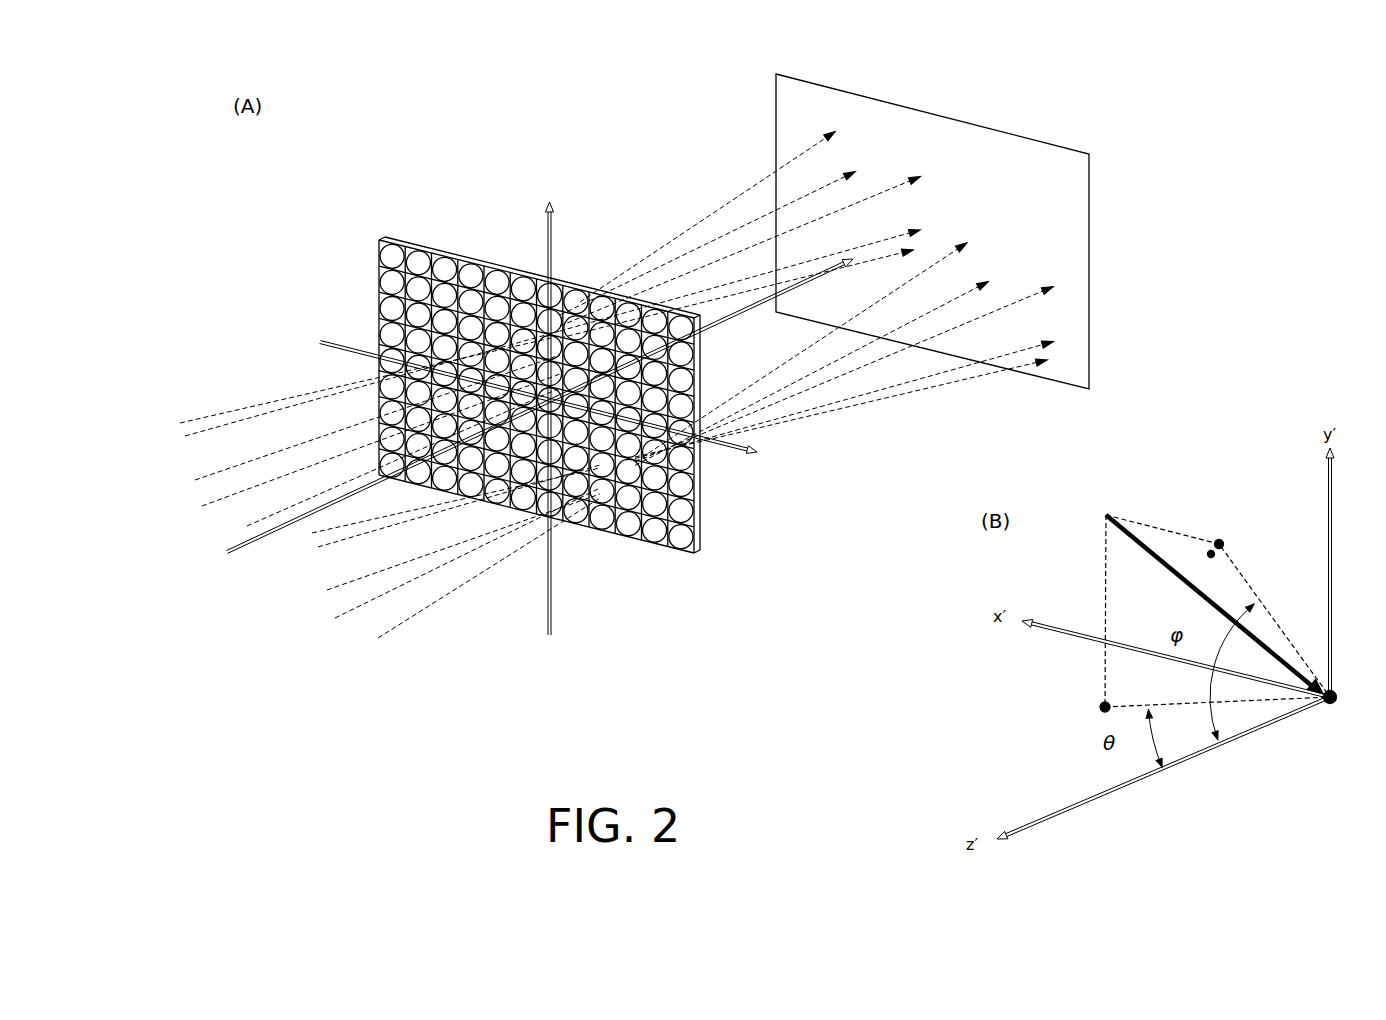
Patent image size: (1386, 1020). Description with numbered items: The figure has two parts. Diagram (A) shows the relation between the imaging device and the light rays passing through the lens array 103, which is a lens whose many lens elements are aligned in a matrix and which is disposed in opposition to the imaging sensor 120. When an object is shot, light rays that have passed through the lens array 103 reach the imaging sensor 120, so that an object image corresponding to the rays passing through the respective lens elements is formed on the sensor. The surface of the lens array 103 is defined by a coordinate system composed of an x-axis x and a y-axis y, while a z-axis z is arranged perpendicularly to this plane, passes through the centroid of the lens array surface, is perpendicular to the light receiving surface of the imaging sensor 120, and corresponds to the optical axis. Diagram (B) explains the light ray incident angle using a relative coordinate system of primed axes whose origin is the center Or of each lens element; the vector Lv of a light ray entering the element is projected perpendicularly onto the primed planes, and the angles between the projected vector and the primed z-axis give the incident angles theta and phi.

The lens array 103 is at (348, 239).
The imaging sensor 120 is at (748, 102).
The vector of a light ray Lv is at (1225, 544).
The center Or is at (1341, 719).
The x-axis x is at (547, 404).
The y-axis y is at (549, 406).
The z-axis z is at (539, 406).